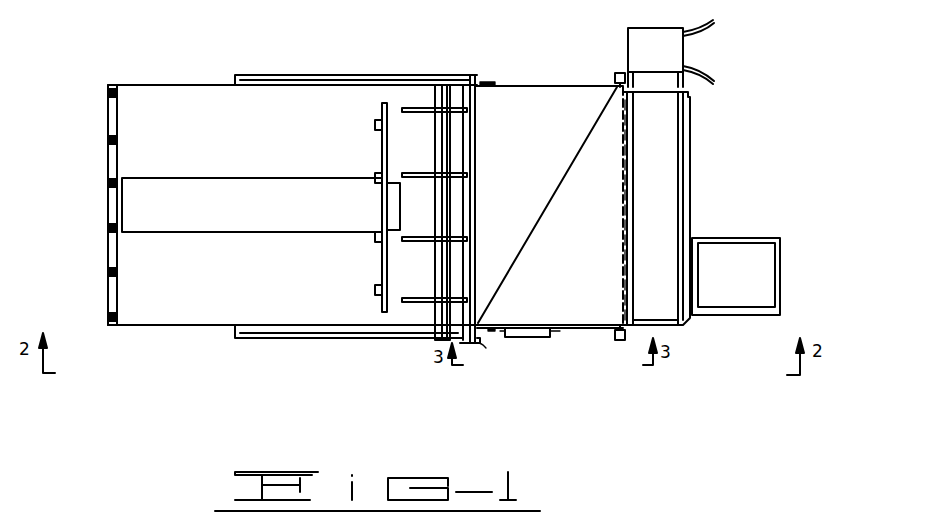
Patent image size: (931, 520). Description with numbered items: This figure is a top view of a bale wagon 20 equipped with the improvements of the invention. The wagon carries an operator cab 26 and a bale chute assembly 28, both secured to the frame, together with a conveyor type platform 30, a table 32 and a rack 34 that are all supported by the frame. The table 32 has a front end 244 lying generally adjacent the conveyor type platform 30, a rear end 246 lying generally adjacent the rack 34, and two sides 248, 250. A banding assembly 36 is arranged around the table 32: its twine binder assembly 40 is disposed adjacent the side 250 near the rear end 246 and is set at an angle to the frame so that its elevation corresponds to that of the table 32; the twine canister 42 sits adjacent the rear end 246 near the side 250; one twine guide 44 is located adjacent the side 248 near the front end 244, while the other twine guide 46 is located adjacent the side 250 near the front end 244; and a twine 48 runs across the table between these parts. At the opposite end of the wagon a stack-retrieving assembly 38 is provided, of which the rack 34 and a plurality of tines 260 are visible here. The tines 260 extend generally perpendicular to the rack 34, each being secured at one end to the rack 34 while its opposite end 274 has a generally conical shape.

The bale wagon 20 is at (345, 58).
The operator cab 26 is at (768, 262).
The bale chute assembly 28 is at (668, 51).
The conveyor type platform 30 is at (668, 131).
The table 32 is at (510, 95).
The rack 34 is at (220, 307).
The banding assembly 36 is at (492, 321).
The stack-retrieving assembly 38 is at (112, 323).
The twine binder assembly 40 is at (535, 328).
The twine canister 42 is at (475, 347).
The twine guide 44 is at (615, 75).
The twine guide 46 is at (620, 341).
The twine 48 is at (555, 193).
The front end 244 is at (626, 262).
The rear end 246 is at (473, 153).
The side 248 is at (537, 87).
The side 250 is at (547, 338).
The tines 260 is at (107, 93).
The opposite end 274 is at (118, 93).